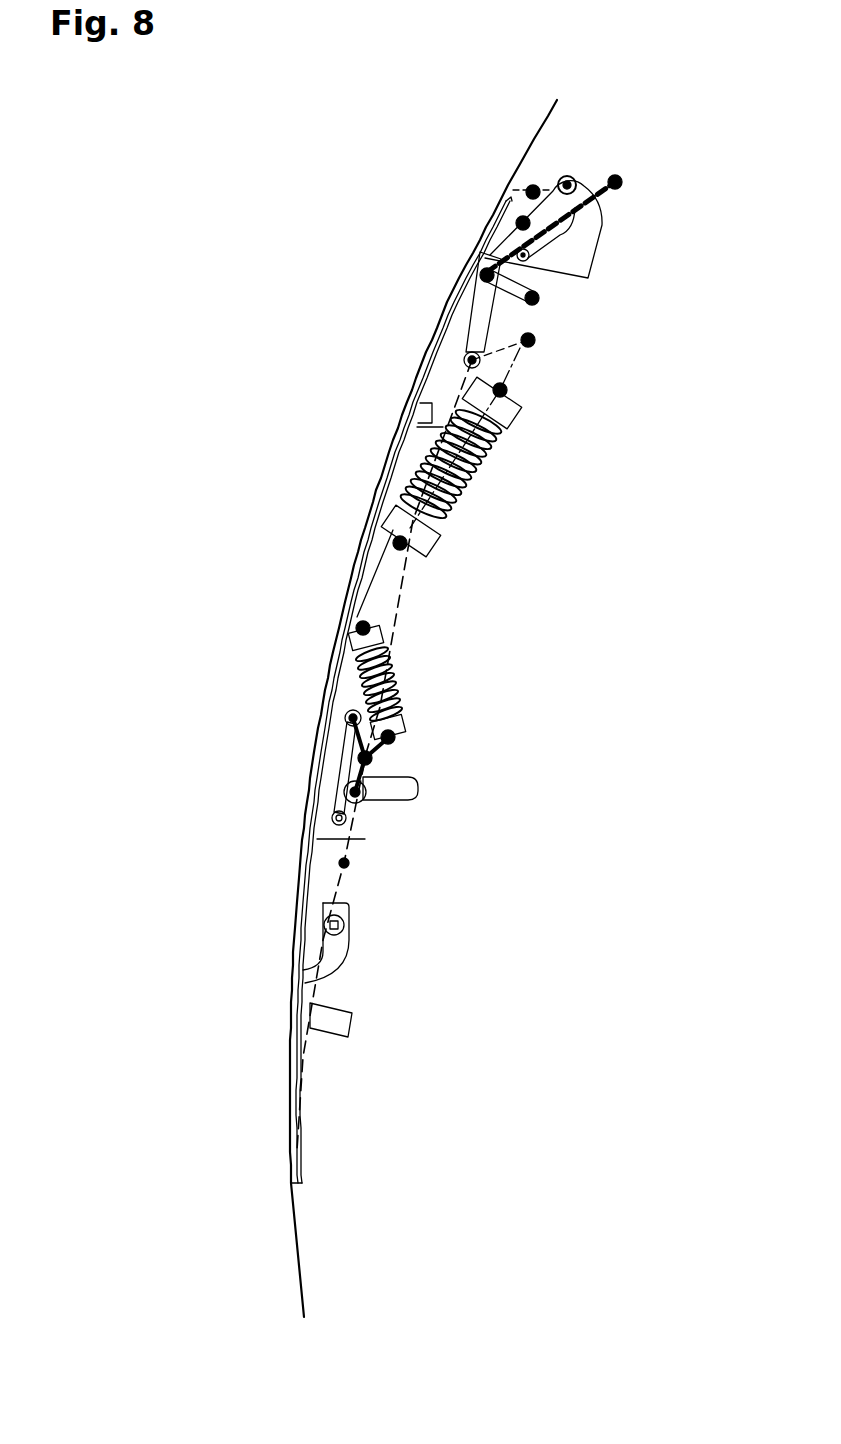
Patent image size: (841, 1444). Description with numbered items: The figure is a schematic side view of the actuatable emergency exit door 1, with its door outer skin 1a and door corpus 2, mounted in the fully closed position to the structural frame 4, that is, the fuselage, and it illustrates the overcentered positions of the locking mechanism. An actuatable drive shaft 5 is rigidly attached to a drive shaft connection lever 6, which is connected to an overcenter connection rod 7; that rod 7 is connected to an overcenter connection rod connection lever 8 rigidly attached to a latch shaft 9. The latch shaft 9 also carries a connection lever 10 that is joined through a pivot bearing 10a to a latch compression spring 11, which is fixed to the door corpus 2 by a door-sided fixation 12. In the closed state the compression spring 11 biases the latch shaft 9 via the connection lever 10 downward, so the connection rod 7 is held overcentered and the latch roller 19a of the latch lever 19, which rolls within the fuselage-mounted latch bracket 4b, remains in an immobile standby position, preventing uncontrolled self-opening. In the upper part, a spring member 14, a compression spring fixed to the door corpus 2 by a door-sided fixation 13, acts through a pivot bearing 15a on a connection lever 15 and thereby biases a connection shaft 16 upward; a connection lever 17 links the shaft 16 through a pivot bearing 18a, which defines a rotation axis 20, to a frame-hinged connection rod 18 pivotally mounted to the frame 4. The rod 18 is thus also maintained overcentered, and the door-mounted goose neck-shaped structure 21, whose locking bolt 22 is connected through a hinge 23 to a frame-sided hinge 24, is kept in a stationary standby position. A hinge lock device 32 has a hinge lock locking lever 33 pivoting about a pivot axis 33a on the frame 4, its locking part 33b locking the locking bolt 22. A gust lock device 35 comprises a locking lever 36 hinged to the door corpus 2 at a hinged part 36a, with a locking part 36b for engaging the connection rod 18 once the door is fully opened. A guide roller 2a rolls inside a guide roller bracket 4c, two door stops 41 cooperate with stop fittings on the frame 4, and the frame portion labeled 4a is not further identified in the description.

The actuatable emergency exit door 1 is at (252, 573).
The door outer skin 1a is at (312, 1066).
The door corpus 2 is at (381, 586).
The guide roller 2a is at (345, 927).
The structural frame 4 is at (546, 120).
The upper head of support member 4a is at (577, 280).
The latch bracket 4b is at (400, 812).
The guide roller bracket 4c is at (340, 972).
The actuatable drive shaft 5 is at (350, 868).
The drive shaft connection lever 6 is at (336, 850).
The overcenter connection rod 7 is at (338, 760).
The overcenter connection rod connection lever 8 is at (345, 713).
The latch shaft 9 is at (372, 762).
The connection lever 10 is at (390, 740).
The pivot bearing 10a is at (395, 735).
The latch compression spring 11 is at (395, 700).
The door-sided fixation 12 is at (366, 624).
The door-sided fixation 13 is at (406, 572).
The spring member 14 is at (470, 487).
The connection lever 15 is at (522, 415).
The pivot bearing 15a is at (505, 392).
The connection shaft 16 is at (508, 378).
The connection lever 17 is at (516, 392).
The frame-hinged connection rod 18 is at (520, 352).
The pivot bearing 18a is at (457, 348).
The latch lever 19 is at (348, 782).
The latch roller 19a is at (370, 803).
The rotation axis 20 is at (464, 361).
The door-mounted goose neck-shaped structure 21 is at (546, 257).
The locking bolt 22 is at (553, 173).
The hinge 23 is at (548, 190).
The frame-sided hinge 24 is at (513, 191).
The hinge lock device 32 is at (603, 164).
The hinge lock locking lever 33 is at (610, 190).
The pivot axis 33a is at (624, 166).
The locking part 33b is at (516, 223).
The gust lock device 35 is at (486, 291).
The locking lever 36 is at (547, 343).
The hinged part 36a is at (481, 272).
The locking part 36b is at (558, 312).
The door stop 41 is at (440, 425).